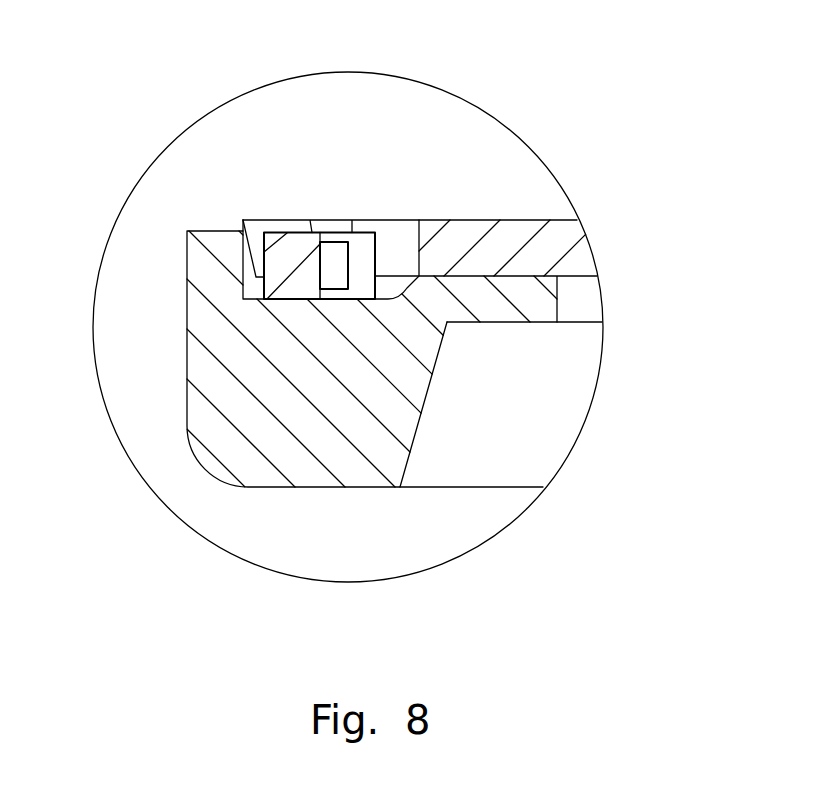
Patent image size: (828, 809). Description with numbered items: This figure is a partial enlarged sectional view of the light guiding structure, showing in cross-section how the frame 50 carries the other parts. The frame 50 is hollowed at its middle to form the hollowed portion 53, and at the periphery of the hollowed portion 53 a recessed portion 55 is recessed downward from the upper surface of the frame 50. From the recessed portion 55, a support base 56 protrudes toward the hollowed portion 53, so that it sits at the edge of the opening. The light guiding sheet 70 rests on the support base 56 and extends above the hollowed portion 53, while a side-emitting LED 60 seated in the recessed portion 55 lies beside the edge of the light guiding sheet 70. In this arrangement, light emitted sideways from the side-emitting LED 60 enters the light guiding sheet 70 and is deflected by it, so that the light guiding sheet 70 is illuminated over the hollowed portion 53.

The frame 50 is at (247, 417).
The hollowed portion 53 is at (558, 393).
The recessed portion 55 is at (382, 299).
The support base 56 is at (532, 298).
The side-emitting LED 60 is at (295, 245).
The light guiding sheet 70 is at (503, 243).